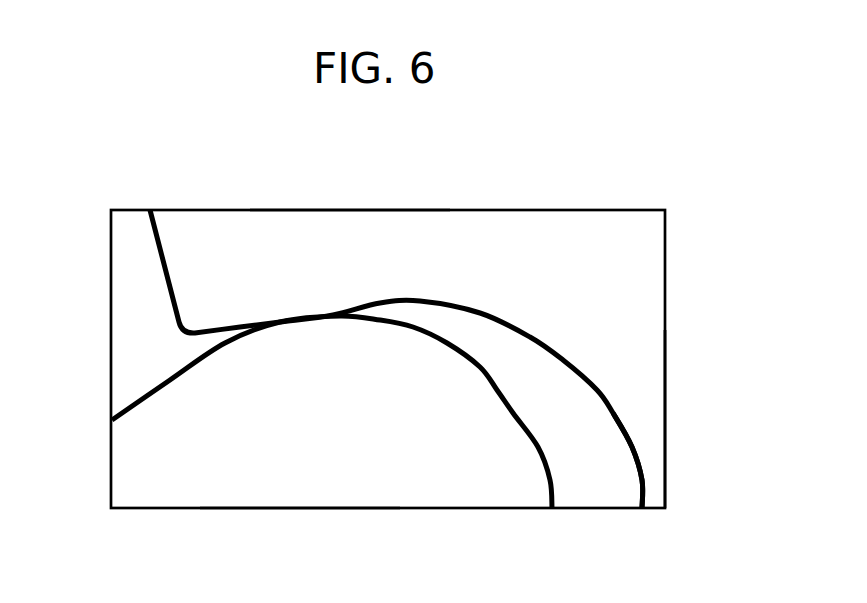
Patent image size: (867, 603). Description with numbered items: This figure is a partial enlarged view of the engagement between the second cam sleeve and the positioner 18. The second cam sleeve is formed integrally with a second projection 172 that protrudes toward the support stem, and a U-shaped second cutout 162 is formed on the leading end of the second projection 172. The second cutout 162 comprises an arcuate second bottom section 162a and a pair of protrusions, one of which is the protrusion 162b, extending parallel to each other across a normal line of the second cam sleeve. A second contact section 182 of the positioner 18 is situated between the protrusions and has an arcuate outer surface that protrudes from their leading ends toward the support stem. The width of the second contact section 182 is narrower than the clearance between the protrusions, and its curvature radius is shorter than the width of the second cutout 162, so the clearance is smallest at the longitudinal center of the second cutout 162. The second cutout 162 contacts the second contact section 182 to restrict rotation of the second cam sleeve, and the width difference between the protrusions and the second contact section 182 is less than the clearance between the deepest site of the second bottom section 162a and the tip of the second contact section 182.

The positioner 18 is at (175, 365).
The second cutout 162 is at (237, 250).
The second bottom section 162a is at (644, 486).
The protrusion 162b is at (340, 232).
The second projection 172 is at (645, 382).
The second contact section 182 is at (283, 495).